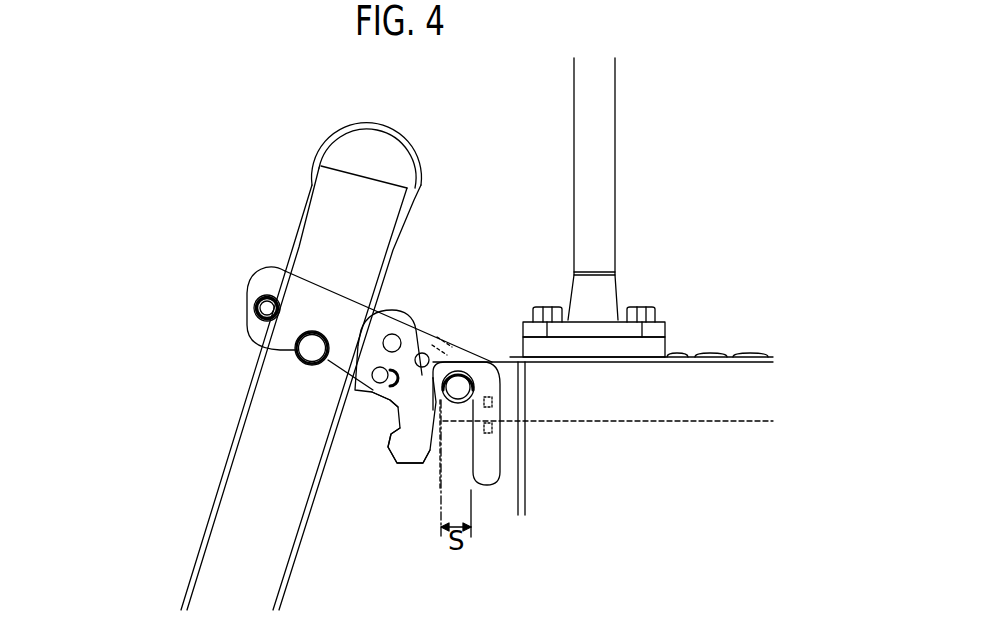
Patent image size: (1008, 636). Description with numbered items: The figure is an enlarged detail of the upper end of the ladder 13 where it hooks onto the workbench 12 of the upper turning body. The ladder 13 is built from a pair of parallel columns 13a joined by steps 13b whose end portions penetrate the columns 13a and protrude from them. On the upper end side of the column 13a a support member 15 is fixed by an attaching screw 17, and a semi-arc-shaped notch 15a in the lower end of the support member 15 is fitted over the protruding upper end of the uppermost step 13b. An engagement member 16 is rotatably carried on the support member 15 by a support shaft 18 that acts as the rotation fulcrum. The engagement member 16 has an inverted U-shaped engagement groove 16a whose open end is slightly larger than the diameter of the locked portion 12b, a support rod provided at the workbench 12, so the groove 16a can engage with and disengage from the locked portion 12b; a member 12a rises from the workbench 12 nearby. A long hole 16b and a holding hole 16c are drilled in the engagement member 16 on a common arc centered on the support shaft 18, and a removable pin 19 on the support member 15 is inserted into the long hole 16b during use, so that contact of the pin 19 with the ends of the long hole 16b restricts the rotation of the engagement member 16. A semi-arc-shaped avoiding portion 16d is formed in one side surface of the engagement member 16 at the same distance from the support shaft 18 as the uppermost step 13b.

The workbench 12 is at (603, 289).
The post 12a is at (573, 162).
The locked portion 12b is at (458, 387).
The ladder 13 is at (241, 350).
The column 13a is at (203, 545).
The step 13b is at (303, 366).
The support member 15 is at (308, 288).
The notch 15a is at (250, 338).
The engagement member 16 is at (411, 393).
The engagement groove 16a is at (433, 402).
The long hole 16b is at (395, 405).
The holding hole 16c is at (424, 358).
The avoiding portion 16d is at (388, 452).
The attaching screw 17 is at (253, 303).
The support shaft 18 is at (392, 343).
The pin 19 is at (380, 377).